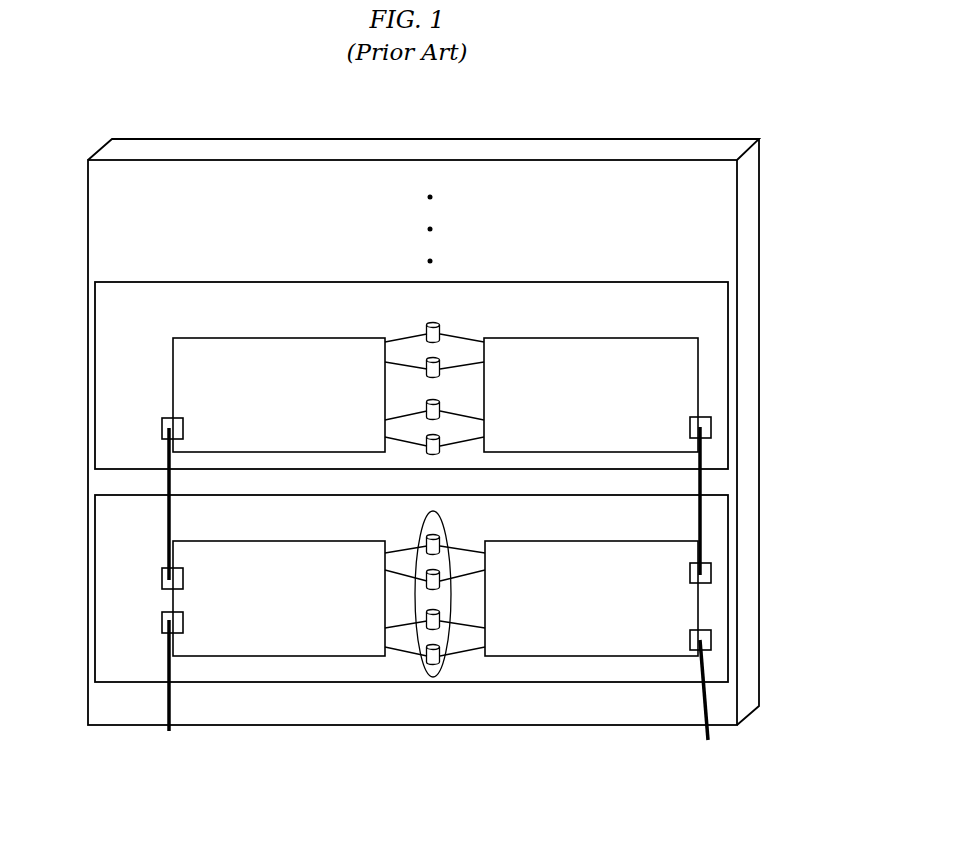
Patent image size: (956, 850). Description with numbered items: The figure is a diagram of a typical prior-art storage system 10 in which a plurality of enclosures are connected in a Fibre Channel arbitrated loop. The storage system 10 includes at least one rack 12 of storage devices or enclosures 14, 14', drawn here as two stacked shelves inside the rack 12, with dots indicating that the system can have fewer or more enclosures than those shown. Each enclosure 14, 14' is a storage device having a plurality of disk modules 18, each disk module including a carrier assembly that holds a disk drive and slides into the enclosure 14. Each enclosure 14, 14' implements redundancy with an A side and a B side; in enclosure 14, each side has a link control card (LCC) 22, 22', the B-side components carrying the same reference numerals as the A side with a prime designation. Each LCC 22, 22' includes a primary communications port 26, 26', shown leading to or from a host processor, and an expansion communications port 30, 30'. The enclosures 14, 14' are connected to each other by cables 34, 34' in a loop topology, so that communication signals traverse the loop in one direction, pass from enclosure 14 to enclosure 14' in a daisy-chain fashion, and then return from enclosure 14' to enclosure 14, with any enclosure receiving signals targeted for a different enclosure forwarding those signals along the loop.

The storage system 10 is at (805, 165).
The rack 12 is at (97, 150).
The enclosure 14 is at (383, 588).
The enclosure 14' is at (382, 375).
The disk modules 18 is at (447, 532).
The link control card 22 is at (279, 580).
The link control card 22' is at (591, 582).
The primary communications port 26 is at (146, 614).
The primary communications port 26' is at (674, 634).
The expansion communications port 30 is at (146, 574).
The expansion communications port 30' is at (678, 546).
The cable 34 is at (139, 579).
The cable 34' is at (748, 583).